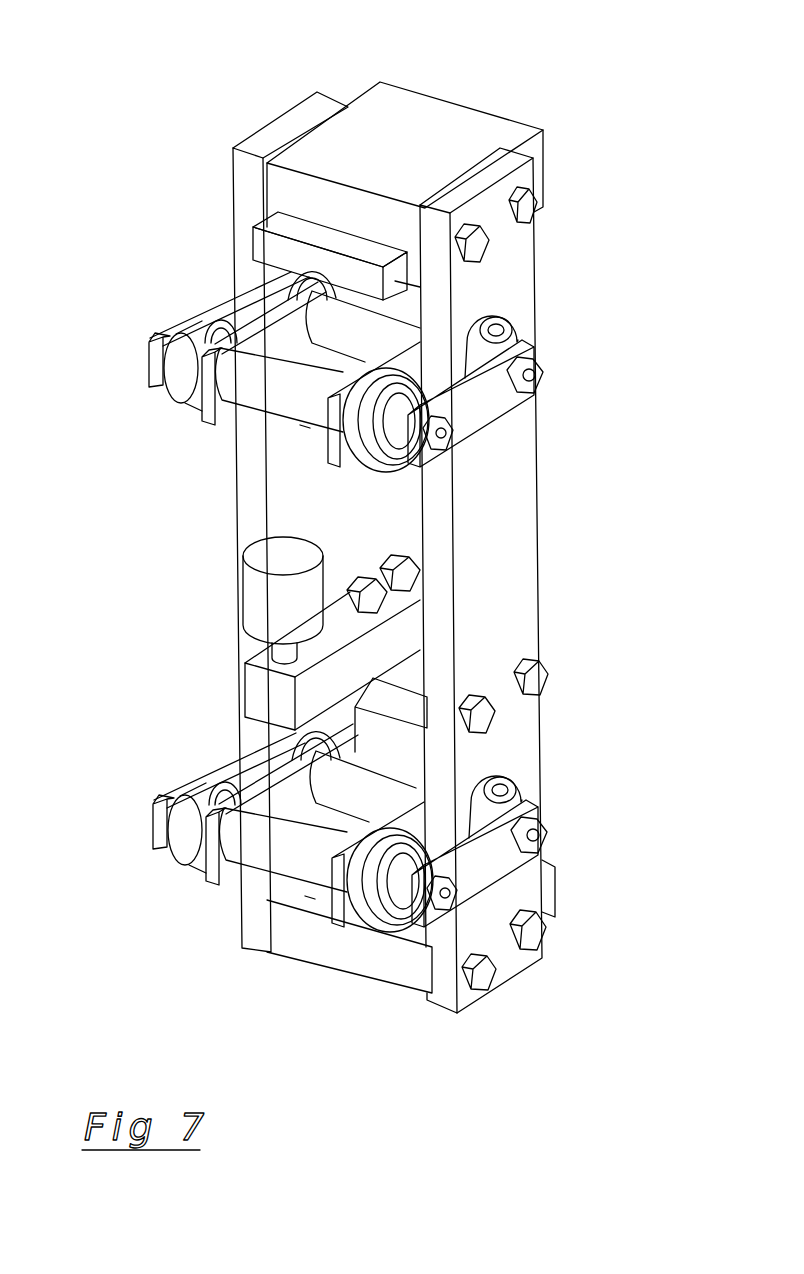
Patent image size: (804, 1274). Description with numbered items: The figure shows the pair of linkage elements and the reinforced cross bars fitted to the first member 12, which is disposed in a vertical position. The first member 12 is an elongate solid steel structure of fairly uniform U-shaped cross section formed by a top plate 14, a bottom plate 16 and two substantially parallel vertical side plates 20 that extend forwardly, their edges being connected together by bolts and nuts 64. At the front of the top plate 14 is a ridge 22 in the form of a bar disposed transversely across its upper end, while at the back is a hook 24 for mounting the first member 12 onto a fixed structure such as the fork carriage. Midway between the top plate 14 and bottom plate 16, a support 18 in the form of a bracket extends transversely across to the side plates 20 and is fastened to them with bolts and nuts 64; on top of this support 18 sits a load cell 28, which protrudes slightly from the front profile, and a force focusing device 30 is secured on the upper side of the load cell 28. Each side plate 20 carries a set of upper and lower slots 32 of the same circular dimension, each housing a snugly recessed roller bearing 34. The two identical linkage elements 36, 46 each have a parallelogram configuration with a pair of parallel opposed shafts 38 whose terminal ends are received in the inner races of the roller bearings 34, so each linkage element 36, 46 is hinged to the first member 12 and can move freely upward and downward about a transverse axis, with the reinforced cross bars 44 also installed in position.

The first member 12 is at (419, 66).
The top plate 14 is at (455, 124).
The bottom plate 16 is at (327, 947).
The support 18 is at (405, 677).
The side plates 20 is at (512, 548).
The ridge 22 is at (283, 242).
The hook 24 is at (540, 164).
The load cell 28 is at (258, 688).
The force focusing device 30 is at (253, 610).
The slots 32 is at (503, 313).
The roller bearing 34 is at (193, 337).
The linkage element 36 is at (289, 428).
The shafts 38 is at (268, 398).
The reinforced cross bars 44 is at (487, 408).
The linkage element 46 is at (303, 893).
The bolts and nuts 64 is at (540, 676).